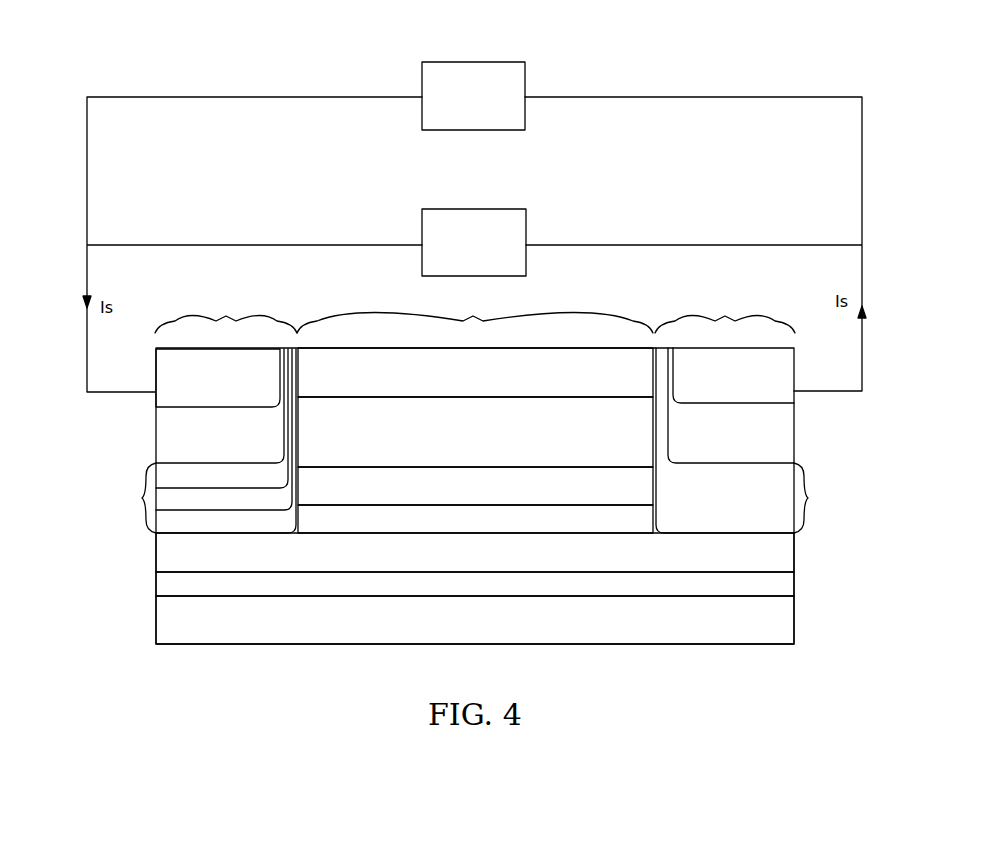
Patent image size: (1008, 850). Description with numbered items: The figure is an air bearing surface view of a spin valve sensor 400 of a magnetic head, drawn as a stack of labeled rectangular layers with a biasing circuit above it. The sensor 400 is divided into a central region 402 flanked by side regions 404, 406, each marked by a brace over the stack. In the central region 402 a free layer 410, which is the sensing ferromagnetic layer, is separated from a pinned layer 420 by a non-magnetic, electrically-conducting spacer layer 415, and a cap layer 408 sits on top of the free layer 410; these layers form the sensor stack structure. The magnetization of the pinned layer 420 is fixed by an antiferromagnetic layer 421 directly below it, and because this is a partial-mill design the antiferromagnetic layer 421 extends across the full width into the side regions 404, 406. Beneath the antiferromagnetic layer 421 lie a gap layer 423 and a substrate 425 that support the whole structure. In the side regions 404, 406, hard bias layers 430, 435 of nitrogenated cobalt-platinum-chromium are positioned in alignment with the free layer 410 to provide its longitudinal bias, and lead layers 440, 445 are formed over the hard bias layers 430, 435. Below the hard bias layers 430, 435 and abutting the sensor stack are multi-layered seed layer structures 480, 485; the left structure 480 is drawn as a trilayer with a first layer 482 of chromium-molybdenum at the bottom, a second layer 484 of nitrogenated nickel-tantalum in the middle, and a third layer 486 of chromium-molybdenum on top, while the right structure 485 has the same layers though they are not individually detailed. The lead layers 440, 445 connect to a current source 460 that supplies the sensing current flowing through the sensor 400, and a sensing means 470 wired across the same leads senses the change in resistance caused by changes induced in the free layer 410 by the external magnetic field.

The spin valve sensor 400 is at (665, 668).
The central region 402 is at (475, 311).
The side region 404 is at (226, 311).
The side region 406 is at (725, 311).
The cap layer 408 is at (511, 388).
The free layer 410 is at (517, 445).
The spacer layer 415 is at (528, 500).
The pinned layer 420 is at (527, 526).
The antiferromagnetic layer 421 is at (517, 563).
The gap layer 423 is at (517, 591).
The substrate 425 is at (551, 628).
The hard bias layer 430 is at (230, 454).
The hard bias layer 435 is at (746, 454).
The lead layer 440 is at (200, 398).
The lead layer 445 is at (720, 396).
The current source 460 is at (526, 226).
The sensing means 470 is at (525, 78).
The multi-layered seed layer structure 480 is at (131, 498).
The first layer 482 is at (170, 522).
The second layer 484 is at (170, 497).
The multi-layered seed layer structure 485 is at (750, 440).
The third layer 486 is at (170, 472).